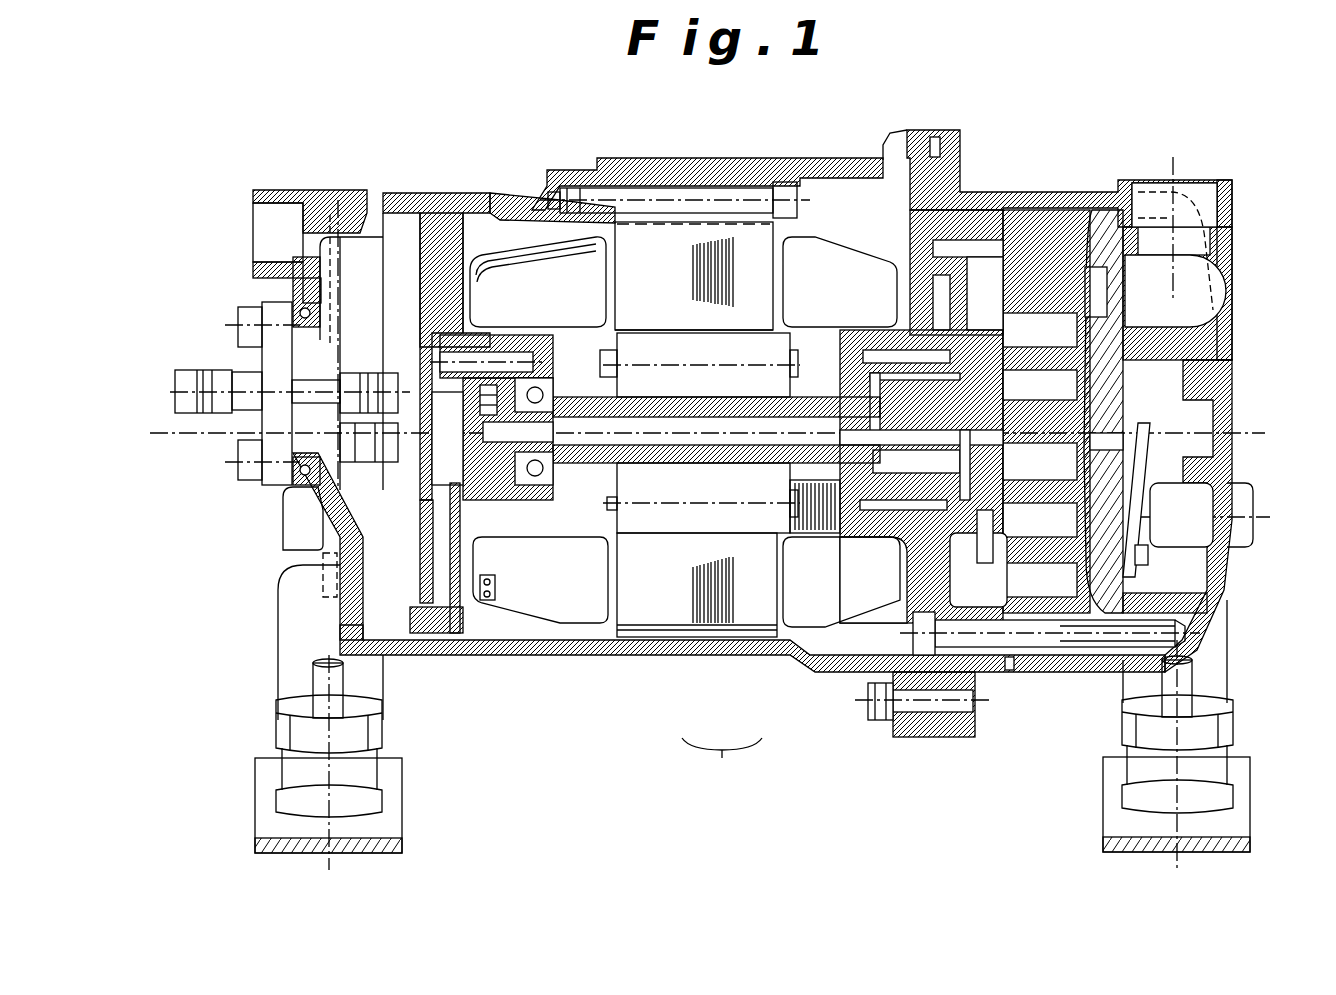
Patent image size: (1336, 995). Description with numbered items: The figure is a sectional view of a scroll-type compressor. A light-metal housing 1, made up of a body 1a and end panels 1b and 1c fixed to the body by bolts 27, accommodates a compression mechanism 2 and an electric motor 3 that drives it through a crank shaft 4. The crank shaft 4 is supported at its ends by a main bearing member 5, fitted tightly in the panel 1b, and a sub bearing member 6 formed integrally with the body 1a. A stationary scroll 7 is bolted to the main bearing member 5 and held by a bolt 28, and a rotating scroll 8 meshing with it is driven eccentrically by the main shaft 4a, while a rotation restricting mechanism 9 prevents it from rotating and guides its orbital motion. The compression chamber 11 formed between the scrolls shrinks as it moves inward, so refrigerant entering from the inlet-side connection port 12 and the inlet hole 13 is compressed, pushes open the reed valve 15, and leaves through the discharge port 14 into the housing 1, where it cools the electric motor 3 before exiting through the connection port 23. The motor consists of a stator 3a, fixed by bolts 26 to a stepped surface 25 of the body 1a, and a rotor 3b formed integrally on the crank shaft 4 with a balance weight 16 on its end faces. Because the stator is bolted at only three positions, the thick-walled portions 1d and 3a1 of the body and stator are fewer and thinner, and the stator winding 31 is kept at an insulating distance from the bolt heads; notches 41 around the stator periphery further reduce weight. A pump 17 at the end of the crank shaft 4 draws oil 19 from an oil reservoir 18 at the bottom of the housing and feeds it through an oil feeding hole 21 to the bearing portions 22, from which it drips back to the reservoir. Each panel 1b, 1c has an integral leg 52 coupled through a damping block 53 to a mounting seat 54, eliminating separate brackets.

The housing 1 is at (653, 657).
The body 1a is at (567, 653).
The panel 1b is at (1217, 462).
The panel 1c is at (345, 655).
The thick-walled portion 1d is at (577, 175).
The compression mechanism 2 is at (1120, 593).
The electric motor 3 is at (716, 595).
The stator 3a is at (743, 600).
The thick-walled portion 3a1 is at (747, 183).
The rotor 3b is at (713, 517).
The crank shaft 4 is at (677, 463).
The main shaft 4a is at (883, 537).
The main bearing member 5 is at (885, 345).
The sub bearing member 6 is at (430, 273).
The stationary scroll 7 is at (1100, 622).
The rotating scroll 8 is at (1038, 662).
The rotation restricting mechanism 9 is at (957, 257).
The compression chamber 11 is at (1035, 327).
The inlet-side connection port 12 is at (1190, 192).
The inlet hole 13 is at (1100, 283).
The discharge port 14 is at (1117, 443).
The reed valve 15 is at (1123, 425).
The balance weight 16 is at (815, 490).
The pump 17 is at (490, 413).
The oil reservoir 18 is at (350, 605).
The oil 19 is at (317, 543).
The oil feeding hole 21 is at (610, 437).
The bearing portion 22 is at (920, 375).
The connection port 23 is at (272, 243).
The stepped surface 25 is at (628, 180).
The bolt 26 is at (707, 193).
The bolt 27 is at (300, 197).
The bolt 28 is at (998, 707).
The winding 31 is at (533, 247).
The notch 41 is at (628, 633).
The leg 52 is at (367, 683).
The damping block 53 is at (353, 763).
The mounting seat 54 is at (390, 848).